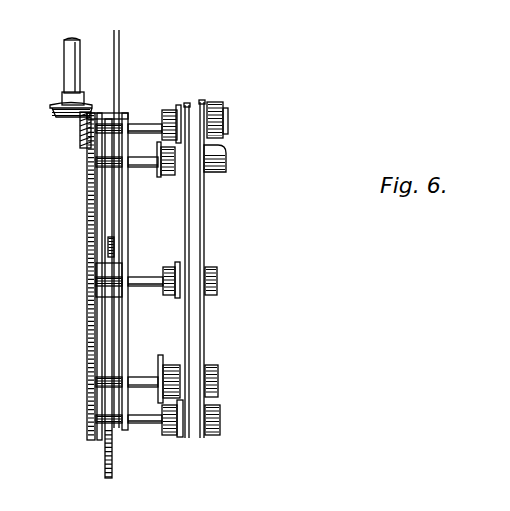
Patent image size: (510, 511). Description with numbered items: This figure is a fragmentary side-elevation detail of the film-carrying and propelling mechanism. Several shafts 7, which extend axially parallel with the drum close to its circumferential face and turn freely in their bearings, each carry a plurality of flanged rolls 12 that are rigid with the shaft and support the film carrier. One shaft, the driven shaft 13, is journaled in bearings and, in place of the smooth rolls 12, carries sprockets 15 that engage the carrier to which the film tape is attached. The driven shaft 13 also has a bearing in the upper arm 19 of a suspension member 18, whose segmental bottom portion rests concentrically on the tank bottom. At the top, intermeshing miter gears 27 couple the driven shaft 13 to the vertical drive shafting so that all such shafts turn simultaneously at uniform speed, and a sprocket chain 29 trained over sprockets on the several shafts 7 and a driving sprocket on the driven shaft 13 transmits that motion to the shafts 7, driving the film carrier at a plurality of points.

The shaft 7 is at (142, 162).
The flanged rolls 12 is at (225, 166).
The driven shaft 13 is at (155, 110).
The sprockets 15 is at (222, 108).
The suspension member 18 is at (104, 467).
The upper arm 19 is at (120, 66).
The miter gears 27 is at (82, 133).
The sprocket chain 29 is at (92, 190).